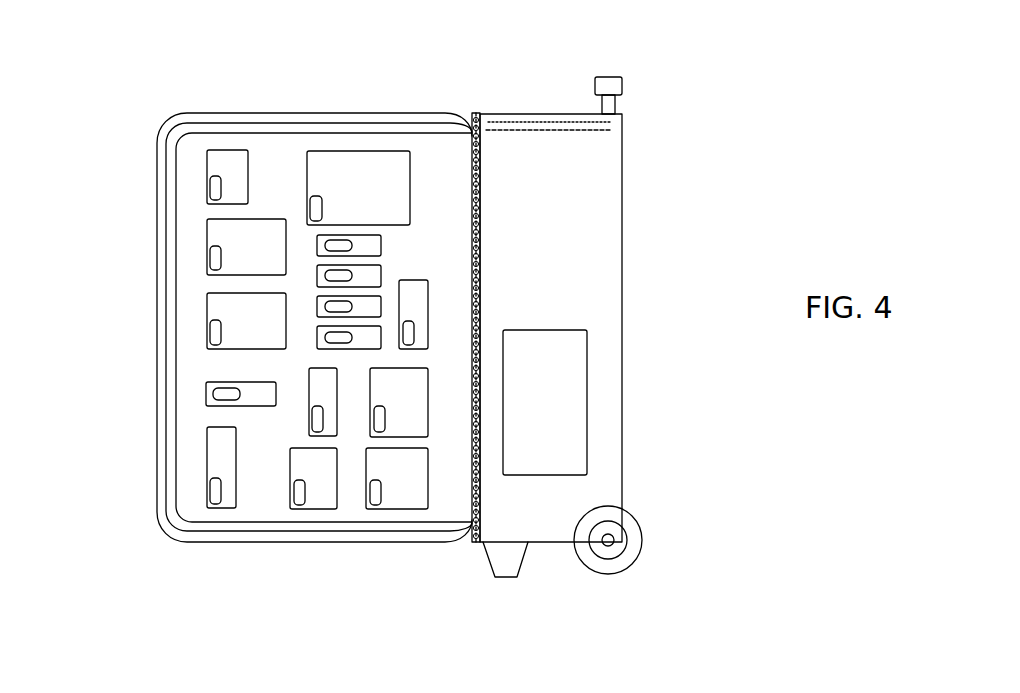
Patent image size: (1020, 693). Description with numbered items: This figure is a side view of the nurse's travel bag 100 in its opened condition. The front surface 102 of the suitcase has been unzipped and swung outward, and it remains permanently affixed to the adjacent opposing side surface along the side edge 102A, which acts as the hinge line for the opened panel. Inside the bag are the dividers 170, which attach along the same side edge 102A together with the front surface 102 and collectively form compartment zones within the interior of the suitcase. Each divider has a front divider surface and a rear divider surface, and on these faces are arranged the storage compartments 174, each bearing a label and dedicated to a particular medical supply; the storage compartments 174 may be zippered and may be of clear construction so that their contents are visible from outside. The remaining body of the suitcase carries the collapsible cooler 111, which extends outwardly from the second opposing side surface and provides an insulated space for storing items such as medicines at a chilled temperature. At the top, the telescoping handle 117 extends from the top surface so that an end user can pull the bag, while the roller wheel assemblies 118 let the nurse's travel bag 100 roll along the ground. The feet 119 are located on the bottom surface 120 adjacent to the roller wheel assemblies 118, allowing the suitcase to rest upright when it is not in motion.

The nurse's travel bag 100 is at (95, 150).
The front surface 102 is at (273, 538).
The side edge 102A is at (470, 105).
The collapsible cooler 111 is at (565, 371).
The telescoping handle 117 is at (620, 84).
The roller wheel assemblies 118 is at (620, 535).
The feet 119 is at (508, 570).
The bottom surface 120 is at (542, 545).
The dividers 170 is at (460, 88).
The storage compartments 174 is at (225, 167).